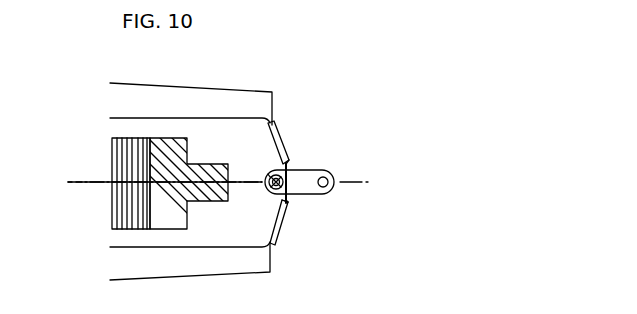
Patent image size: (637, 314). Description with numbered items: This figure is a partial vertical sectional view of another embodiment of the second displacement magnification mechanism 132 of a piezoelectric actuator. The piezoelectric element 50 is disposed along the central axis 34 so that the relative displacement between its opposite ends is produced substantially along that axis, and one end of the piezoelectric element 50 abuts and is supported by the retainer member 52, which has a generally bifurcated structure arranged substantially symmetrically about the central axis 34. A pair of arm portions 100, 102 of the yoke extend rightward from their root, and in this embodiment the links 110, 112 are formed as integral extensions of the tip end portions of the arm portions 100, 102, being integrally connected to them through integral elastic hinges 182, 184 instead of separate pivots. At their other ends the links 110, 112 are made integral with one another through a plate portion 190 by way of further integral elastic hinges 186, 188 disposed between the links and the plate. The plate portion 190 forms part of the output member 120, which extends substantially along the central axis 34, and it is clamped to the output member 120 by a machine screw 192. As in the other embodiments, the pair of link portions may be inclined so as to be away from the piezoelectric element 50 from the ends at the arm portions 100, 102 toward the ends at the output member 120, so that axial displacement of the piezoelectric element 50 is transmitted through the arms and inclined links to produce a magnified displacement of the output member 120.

The central axis 34 is at (100, 177).
The piezoelectric element 50 is at (130, 207).
The retainer member 52 is at (163, 139).
The arm portion 100 is at (204, 96).
The arm portion 102 is at (213, 256).
The link 110 is at (283, 140).
The link 112 is at (284, 222).
The output member 120 is at (317, 170).
The second displacement magnification mechanism 132 is at (288, 80).
The integral elastic hinge 182 is at (279, 123).
The integral elastic hinge 184 is at (274, 240).
The integral elastic hinge 186 is at (290, 163).
The integral elastic hinge 188 is at (289, 203).
The plate portion 190 is at (268, 173).
The machine screw 192 is at (275, 190).